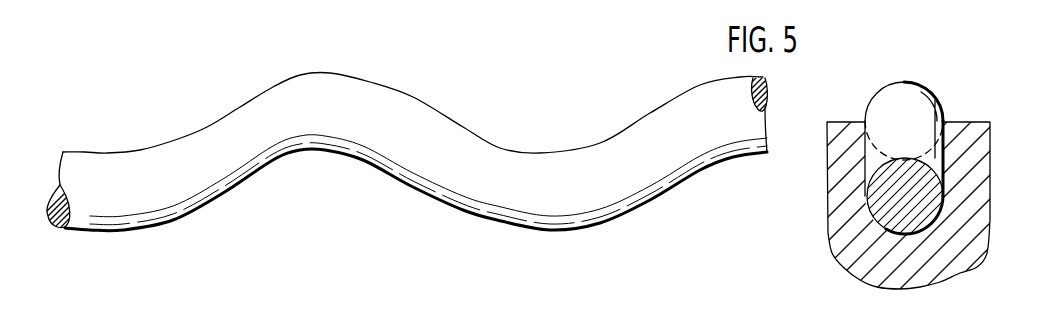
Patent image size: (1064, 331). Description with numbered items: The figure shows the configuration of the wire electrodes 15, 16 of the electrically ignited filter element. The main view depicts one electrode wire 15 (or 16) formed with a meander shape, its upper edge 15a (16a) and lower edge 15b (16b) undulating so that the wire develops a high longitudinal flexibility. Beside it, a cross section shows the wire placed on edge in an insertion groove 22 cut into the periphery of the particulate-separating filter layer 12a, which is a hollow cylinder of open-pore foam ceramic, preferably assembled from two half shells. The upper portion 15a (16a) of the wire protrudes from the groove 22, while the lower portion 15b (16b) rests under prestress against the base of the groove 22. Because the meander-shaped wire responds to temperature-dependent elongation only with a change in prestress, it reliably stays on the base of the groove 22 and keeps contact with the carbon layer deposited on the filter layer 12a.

The electrode wire 15 is at (552, 163).
The electrode wire 16 is at (513, 170).
The upper strand of wire element 15a is at (530, 93).
The upper strand of wire element 16a is at (310, 73).
The lower strand of wire element 15b is at (564, 175).
The lower strand of wire element 16b is at (522, 228).
The insertion groove 22 is at (947, 167).
The particulate-separating filter layer 12a is at (973, 175).